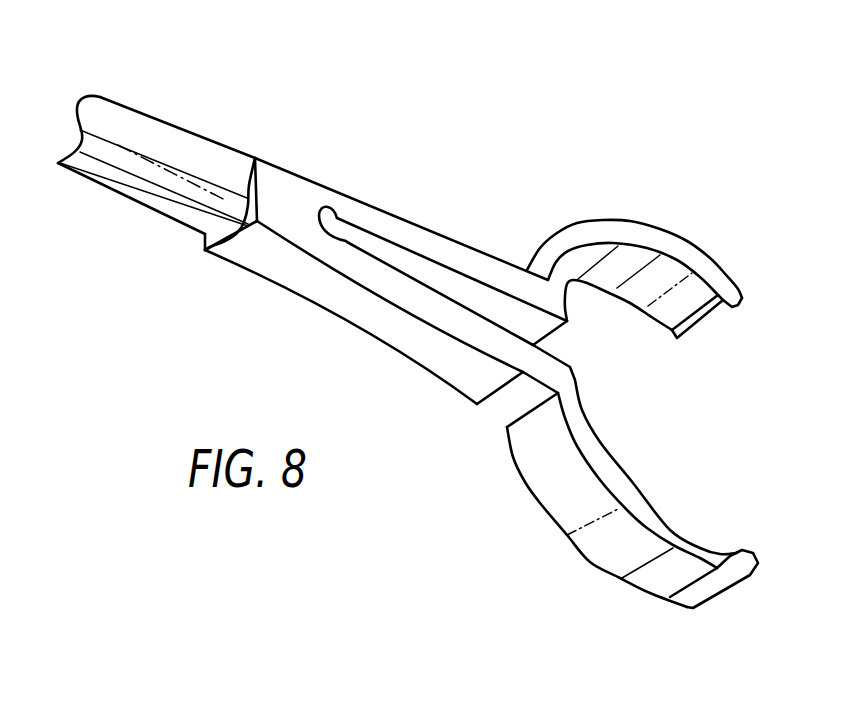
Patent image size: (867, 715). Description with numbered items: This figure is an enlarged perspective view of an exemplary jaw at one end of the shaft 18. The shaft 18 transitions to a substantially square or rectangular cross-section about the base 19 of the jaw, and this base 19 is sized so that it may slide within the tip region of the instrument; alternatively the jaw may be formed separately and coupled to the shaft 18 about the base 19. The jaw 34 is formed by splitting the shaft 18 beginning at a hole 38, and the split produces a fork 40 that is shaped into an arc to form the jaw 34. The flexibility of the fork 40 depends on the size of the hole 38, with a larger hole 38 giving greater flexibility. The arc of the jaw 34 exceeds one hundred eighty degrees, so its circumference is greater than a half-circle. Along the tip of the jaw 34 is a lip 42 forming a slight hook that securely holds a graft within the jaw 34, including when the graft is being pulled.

The shaft 18 is at (156, 133).
The base 19 is at (278, 178).
The hole 38 is at (333, 229).
The fork 40 is at (422, 237).
The lip 42 is at (710, 313).
The jaw 34 is at (652, 578).